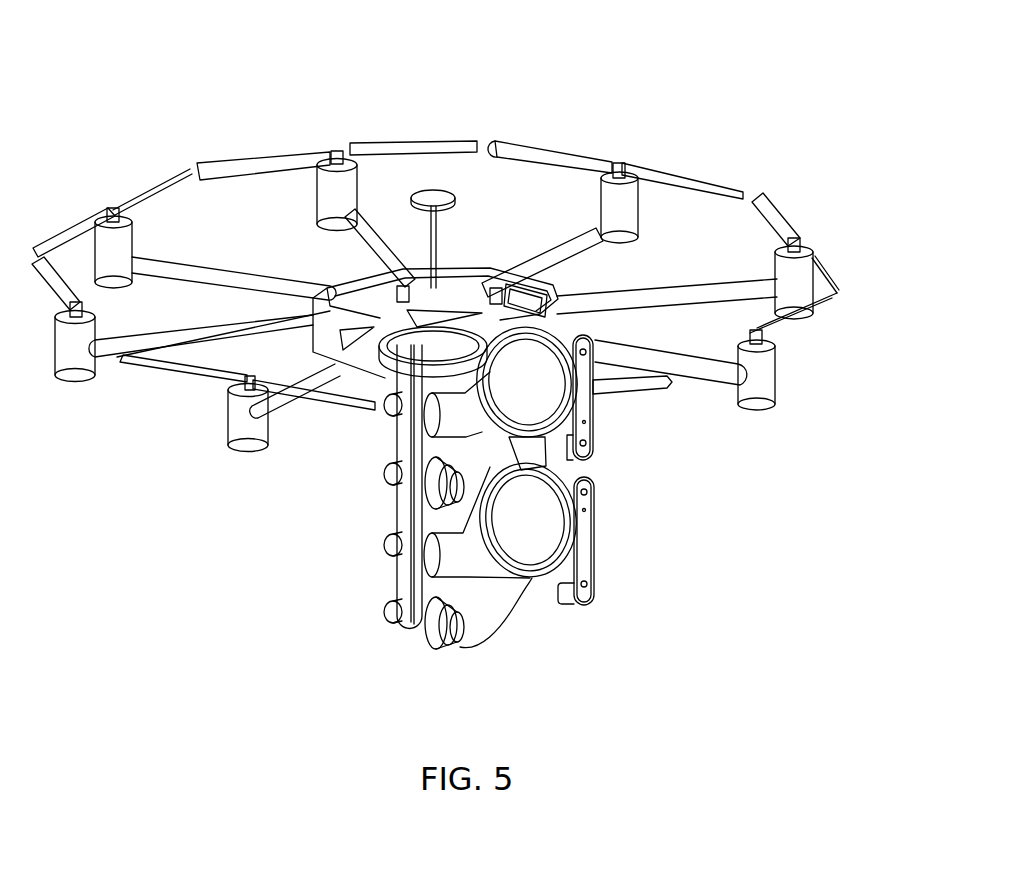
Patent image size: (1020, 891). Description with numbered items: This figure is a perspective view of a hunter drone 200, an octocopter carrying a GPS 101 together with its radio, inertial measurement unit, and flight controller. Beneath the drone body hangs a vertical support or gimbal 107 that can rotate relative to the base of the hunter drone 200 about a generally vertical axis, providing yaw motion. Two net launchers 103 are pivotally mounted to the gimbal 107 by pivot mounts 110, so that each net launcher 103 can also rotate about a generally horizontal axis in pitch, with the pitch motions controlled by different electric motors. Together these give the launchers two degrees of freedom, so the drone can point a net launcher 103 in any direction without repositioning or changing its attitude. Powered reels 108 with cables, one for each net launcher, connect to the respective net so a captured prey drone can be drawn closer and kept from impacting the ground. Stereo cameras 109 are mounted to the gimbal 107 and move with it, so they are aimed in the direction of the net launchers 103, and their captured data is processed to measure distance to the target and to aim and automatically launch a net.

The hunter drone 200 is at (186, 106).
The GPS 101 is at (448, 185).
The net launchers 103 is at (553, 444).
The gimbal 107 is at (392, 454).
The powered reels 108 is at (420, 491).
The stereo cameras 109 is at (599, 400).
The pivot mounts 110 is at (388, 404).